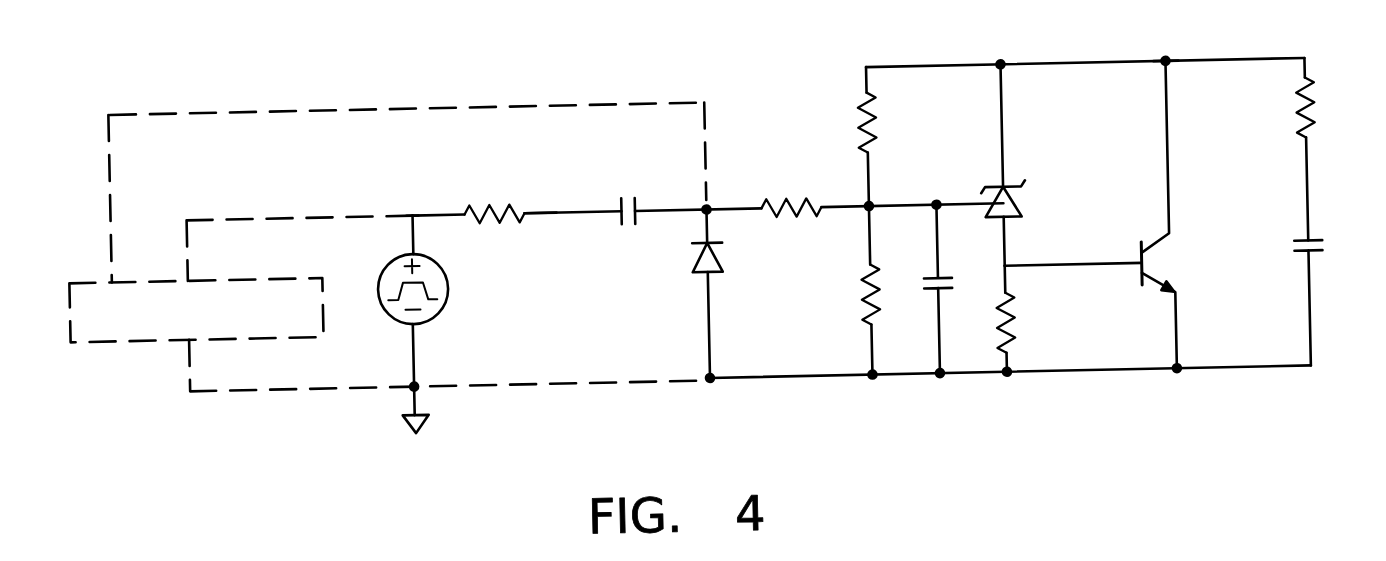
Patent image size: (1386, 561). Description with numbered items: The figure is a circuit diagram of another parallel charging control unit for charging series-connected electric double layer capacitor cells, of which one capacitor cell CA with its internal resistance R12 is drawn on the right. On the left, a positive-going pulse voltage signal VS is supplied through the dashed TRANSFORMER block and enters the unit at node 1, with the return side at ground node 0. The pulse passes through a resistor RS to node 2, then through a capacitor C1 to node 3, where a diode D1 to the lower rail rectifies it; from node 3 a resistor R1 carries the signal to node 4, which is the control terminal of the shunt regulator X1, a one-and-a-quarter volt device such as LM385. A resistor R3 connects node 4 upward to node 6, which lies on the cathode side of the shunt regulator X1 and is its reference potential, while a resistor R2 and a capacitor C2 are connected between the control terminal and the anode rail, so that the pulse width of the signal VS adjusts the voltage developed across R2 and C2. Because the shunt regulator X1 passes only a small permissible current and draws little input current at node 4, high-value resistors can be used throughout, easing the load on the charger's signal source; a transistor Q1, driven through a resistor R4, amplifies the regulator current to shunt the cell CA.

The transformer TRANSFORMER is at (196, 310).
The pulse voltage signal VS is at (425, 314).
The resistor RS is at (496, 216).
The capacitor C1 is at (628, 197).
The diode D1 is at (693, 296).
The resistor R1 is at (783, 192).
The resistor R3 is at (827, 139).
The resistor R2 is at (836, 293).
The capacitor C2 is at (923, 291).
The shunt regulator X1 is at (1044, 162).
The resistor R4 is at (1025, 321).
The transistor Q1 is at (1134, 215).
The internal resistance R12 is at (1280, 150).
The capacitor cell CA is at (1330, 297).
The node 0 is at (435, 408).
The node 1 is at (411, 199).
The node 2 is at (539, 195).
The node 3 is at (686, 195).
The node 4 is at (952, 186).
The node 6 is at (1133, 41).